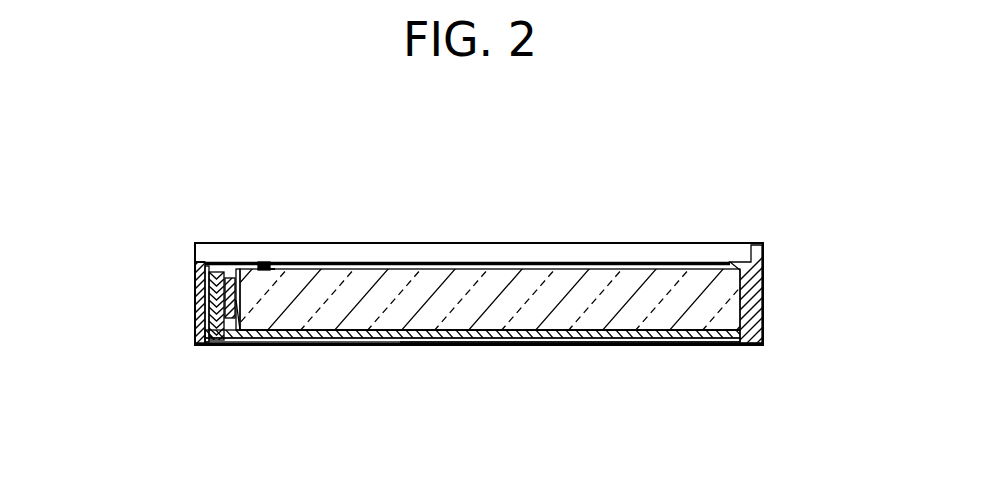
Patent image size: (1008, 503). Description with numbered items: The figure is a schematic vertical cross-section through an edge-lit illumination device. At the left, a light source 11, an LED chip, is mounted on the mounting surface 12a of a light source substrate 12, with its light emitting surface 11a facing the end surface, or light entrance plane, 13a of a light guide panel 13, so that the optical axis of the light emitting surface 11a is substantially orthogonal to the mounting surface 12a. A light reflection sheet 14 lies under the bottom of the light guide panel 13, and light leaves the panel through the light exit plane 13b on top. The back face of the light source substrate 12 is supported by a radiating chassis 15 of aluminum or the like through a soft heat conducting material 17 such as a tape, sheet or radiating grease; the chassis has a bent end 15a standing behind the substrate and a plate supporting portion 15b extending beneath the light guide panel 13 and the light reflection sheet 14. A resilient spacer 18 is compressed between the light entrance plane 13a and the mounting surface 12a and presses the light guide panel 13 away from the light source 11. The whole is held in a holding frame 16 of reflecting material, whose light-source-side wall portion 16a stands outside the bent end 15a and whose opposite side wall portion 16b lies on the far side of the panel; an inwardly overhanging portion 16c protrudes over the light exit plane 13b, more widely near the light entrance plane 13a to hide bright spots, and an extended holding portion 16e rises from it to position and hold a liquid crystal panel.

The light source 11 is at (240, 270).
The light emitting surface 11a is at (236, 326).
The light source substrate 12 is at (222, 272).
The mounting surface 12a is at (235, 320).
The light guide panel 13 is at (545, 280).
The end surface (light entrance plane) 13a is at (241, 333).
The light exit plane 13b is at (450, 262).
The light reflection sheet 14 is at (492, 338).
The radiating chassis 15 is at (385, 340).
The bent end 15a is at (204, 297).
The plate supporting portion 15b is at (596, 342).
The holding frame 16 is at (762, 292).
The light-source-side wall portion 16a is at (197, 322).
The opposite side wall portion 16b is at (762, 328).
The inwardly overhanging portion 16c is at (268, 262).
The extended holding portion 16e is at (413, 243).
The heat conducting material 17 is at (205, 260).
The resilient spacer 18 is at (256, 262).